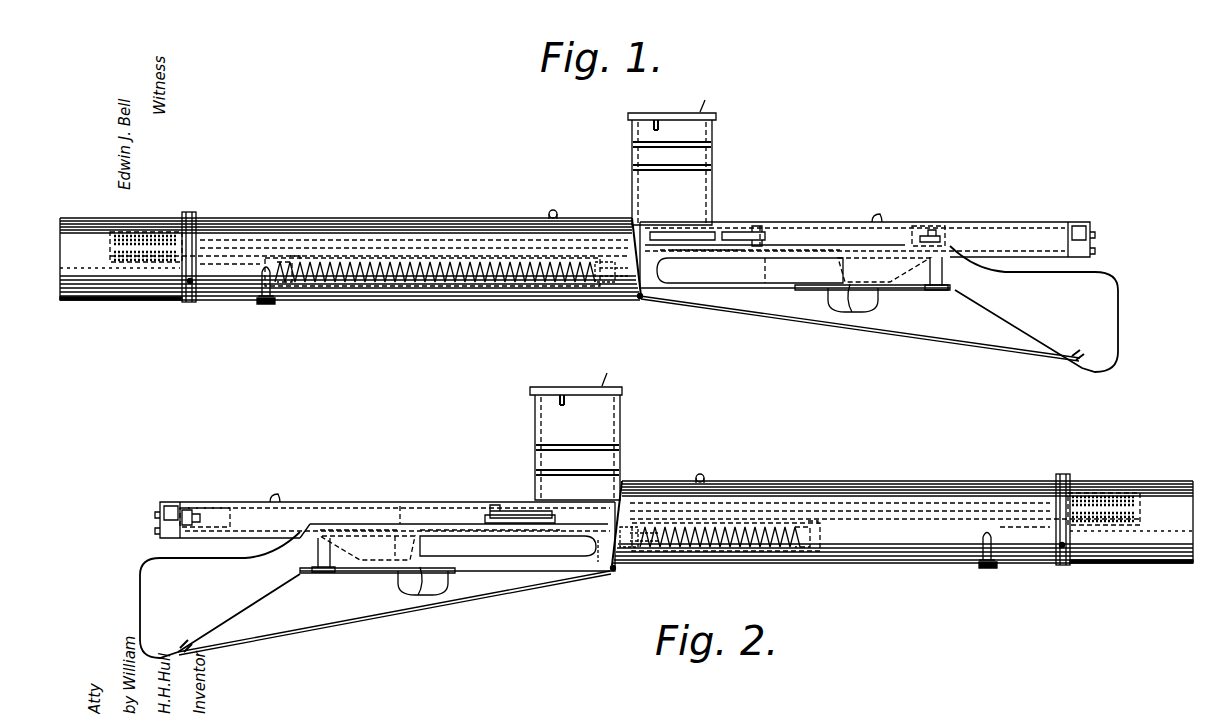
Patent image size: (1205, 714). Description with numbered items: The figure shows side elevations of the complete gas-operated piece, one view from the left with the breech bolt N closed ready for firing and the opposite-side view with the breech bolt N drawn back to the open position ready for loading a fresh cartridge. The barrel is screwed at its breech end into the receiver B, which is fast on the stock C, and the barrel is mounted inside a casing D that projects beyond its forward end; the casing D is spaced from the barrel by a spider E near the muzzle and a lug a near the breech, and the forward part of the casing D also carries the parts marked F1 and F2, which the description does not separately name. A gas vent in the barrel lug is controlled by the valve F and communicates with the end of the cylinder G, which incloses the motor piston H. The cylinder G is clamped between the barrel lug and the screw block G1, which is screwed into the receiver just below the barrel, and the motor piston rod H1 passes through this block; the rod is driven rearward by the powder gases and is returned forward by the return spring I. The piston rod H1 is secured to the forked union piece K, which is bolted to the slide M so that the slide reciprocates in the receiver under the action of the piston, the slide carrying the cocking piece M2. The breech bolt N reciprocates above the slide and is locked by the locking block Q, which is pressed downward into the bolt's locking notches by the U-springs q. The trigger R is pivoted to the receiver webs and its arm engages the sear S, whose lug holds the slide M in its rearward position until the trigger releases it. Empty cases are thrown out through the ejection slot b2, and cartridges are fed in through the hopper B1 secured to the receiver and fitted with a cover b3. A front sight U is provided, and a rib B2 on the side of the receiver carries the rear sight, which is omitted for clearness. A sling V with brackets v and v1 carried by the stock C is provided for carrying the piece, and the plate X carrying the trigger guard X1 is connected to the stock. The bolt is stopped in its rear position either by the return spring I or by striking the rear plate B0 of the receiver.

In FIG. 1, the casing D is at (322, 219).
In FIG. 2, the casing D is at (842, 482).
In FIG. 1, the front sight U is at (193, 213).
In FIG. 2, the front sight U is at (1063, 519).
In FIG. 1, the perforated plate F1 is at (148, 235).
In FIG. 2, the perforated plate F1 is at (1128, 495).
In FIG. 1, the stop F2 is at (256, 300).
In FIG. 2, the stop F2 is at (998, 566).
In FIG. 1, the valve F is at (266, 298).
In FIG. 2, the valve F is at (988, 562).
In FIG. 1, the spider E is at (185, 282).
In FIG. 2, the spider E is at (1068, 547).
In FIG. 1, the motor piston H is at (289, 298).
In FIG. 2, the motor piston H is at (818, 556).
In FIG. 1, the motor piston rod H1 is at (512, 298).
In FIG. 2, the motor piston rod H1 is at (665, 566).
In FIG. 1, the return spring I is at (384, 298).
In FIG. 2, the return spring I is at (732, 560).
In FIG. 1, the cylinder G is at (428, 296).
In FIG. 2, the cylinder G is at (765, 560).
In FIG. 1, the lug a is at (549, 212).
In FIG. 2, the lug a is at (704, 480).
In FIG. 1, the bracket v is at (639, 299).
In FIG. 2, the bracket v is at (613, 572).
In FIG. 1, the bracket v1 is at (1078, 362).
In FIG. 2, the bracket v1 is at (188, 640).
In FIG. 1, the receiver B is at (985, 218).
In FIG. 2, the receiver B is at (322, 500).
In FIG. 1, the rear plate B0 is at (1093, 232).
In FIG. 2, the rear plate B0 is at (160, 518).
In FIG. 1, the hopper B1 is at (715, 125).
In FIG. 2, the hopper B1 is at (622, 416).
In FIG. 1, the rib B2 is at (690, 225).
In FIG. 2, the ejection slot b2 is at (515, 515).
In FIG. 1, the cover b3 is at (713, 92).
In FIG. 2, the cover b3 is at (611, 382).
In FIG. 1, the breech bolt N is at (735, 232).
In FIG. 2, the breech bolt N is at (405, 512).
In FIG. 1, the slide T is at (750, 232).
In FIG. 2, the slide T is at (500, 510).
In FIG. 1, the union piece K is at (663, 290).
In FIG. 2, the union piece K is at (440, 560).
In FIG. 1, the slide M is at (768, 285).
In FIG. 2, the slide M is at (238, 538).
In FIG. 1, the cocking piece M2 is at (876, 217).
In FIG. 2, the cocking piece M2 is at (274, 495).
In FIG. 1, the locking block Q is at (915, 228).
In FIG. 2, the locking block Q is at (210, 510).
In FIG. 1, the U-springs q is at (930, 230).
In FIG. 2, the U-springs q is at (186, 508).
In FIG. 1, the sear S is at (892, 285).
In FIG. 2, the sear S is at (356, 562).
In FIG. 1, the plate X is at (934, 292).
In FIG. 2, the plate X is at (318, 574).
In FIG. 1, the trigger guard X1 is at (886, 312).
In FIG. 2, the trigger guard X1 is at (425, 597).
In FIG. 1, the trigger R is at (852, 312).
In FIG. 2, the trigger R is at (415, 597).
In FIG. 1, the stock C is at (985, 322).
In FIG. 2, the stock C is at (272, 598).
In FIG. 1, the sling V is at (798, 325).
In FIG. 2, the sling V is at (346, 628).
In FIG. 2, the screw block G1 is at (590, 578).